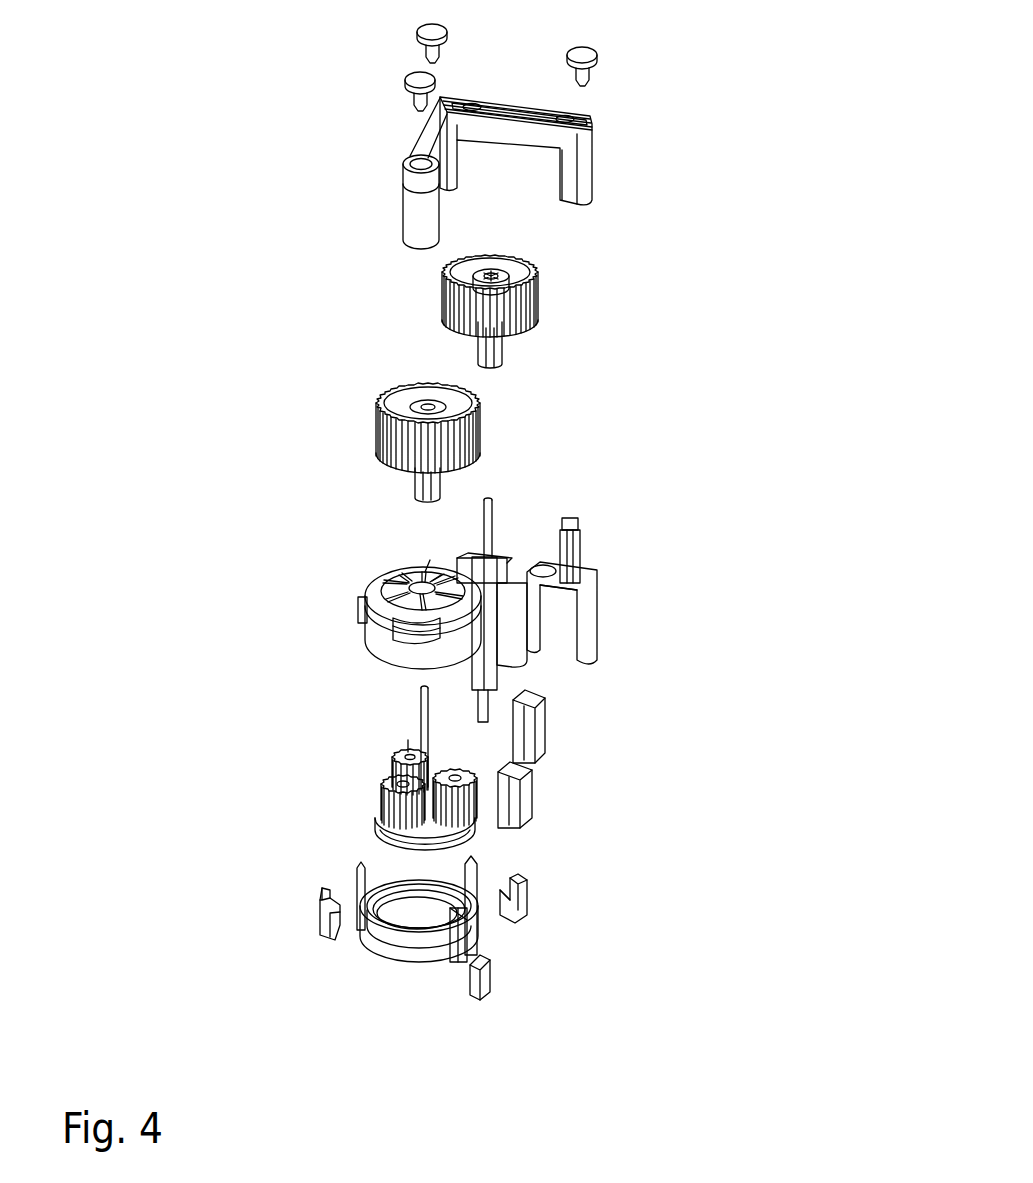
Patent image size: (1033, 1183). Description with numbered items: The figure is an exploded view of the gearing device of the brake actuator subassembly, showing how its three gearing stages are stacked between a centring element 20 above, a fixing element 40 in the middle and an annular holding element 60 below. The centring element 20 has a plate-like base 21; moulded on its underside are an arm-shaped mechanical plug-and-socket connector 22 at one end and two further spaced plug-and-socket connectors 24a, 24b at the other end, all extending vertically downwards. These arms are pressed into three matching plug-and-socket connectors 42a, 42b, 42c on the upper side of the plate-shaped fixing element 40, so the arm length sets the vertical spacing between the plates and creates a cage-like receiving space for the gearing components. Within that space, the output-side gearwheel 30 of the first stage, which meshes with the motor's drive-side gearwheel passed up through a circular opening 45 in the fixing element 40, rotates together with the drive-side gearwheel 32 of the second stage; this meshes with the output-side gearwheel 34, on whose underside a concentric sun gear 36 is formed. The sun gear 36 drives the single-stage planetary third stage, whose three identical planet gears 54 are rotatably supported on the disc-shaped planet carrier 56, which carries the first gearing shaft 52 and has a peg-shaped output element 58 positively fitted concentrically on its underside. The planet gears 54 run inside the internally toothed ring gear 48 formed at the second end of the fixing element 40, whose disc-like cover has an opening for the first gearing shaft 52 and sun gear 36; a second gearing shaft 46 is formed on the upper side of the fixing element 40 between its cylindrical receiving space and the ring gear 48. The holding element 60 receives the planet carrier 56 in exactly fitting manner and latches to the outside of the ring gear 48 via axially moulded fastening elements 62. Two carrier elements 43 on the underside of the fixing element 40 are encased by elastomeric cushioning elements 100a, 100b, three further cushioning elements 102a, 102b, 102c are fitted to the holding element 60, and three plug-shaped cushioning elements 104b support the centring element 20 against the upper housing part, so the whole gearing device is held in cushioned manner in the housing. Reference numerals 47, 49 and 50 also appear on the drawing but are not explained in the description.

The centring element 20 is at (642, 161).
The plate-like base 21 is at (506, 100).
The mechanical plug-and-socket connector 22 is at (585, 176).
The mechanical plug-and-socket connector 24a is at (420, 216).
The mechanical plug-and-socket connector 24b is at (458, 155).
The output-side gearwheel of the first gearing stage 30 is at (540, 300).
The drive-side gearwheel of the second gearing stage 32 is at (506, 352).
The output-side gearwheel of the second gearing stage 34 is at (388, 396).
The sun gear 36 is at (372, 474).
The fixing element 40 is at (634, 640).
The mechanical plug-and-socket connector 42a is at (580, 548).
The mechanical plug-and-socket connector 42b is at (410, 632).
The mechanical plug-and-socket connector 42c is at (430, 584).
The carrier element 43 is at (441, 738).
The circular opening 45 is at (546, 580).
The second gearing shaft 46 is at (497, 536).
The spoke 47 is at (428, 575).
The ring gear 48 is at (388, 590).
The side tab 49 is at (357, 603).
The gear train assembly 50 is at (264, 799).
The first gearing shaft 52 is at (418, 700).
The planet gear 54 is at (392, 760).
The planet carrier 56 is at (386, 818).
The output element 58 is at (442, 846).
The holding element 60 is at (370, 972).
The fastening element 62 is at (456, 963).
The cushioning element 100a is at (513, 800).
The cushioning element 100b is at (526, 732).
The cushioning element 102a is at (486, 978).
The cushioning element 102b is at (332, 940).
The cushioning element 102c is at (530, 894).
The plug-shaped cushioning element 104b is at (420, 28).